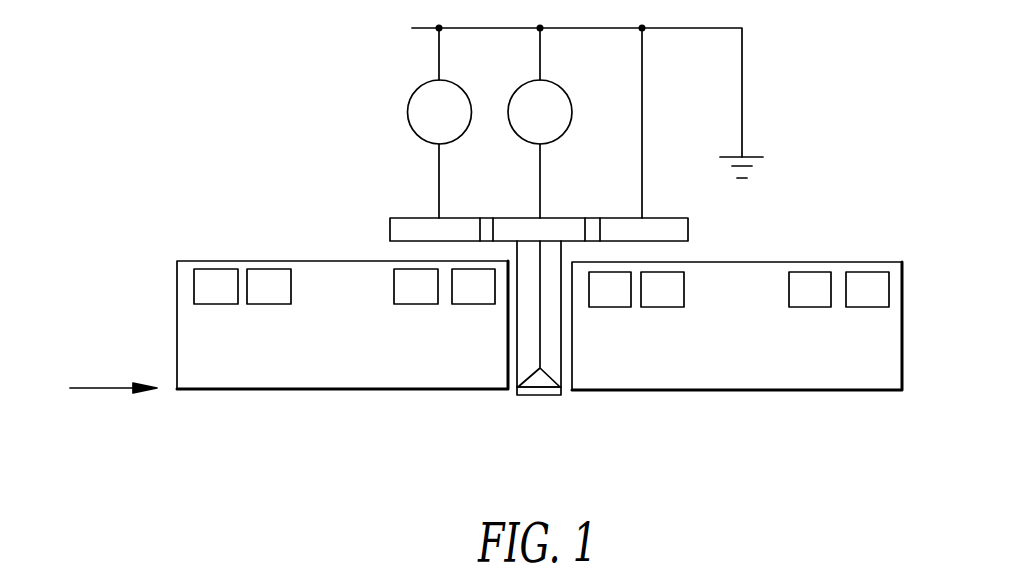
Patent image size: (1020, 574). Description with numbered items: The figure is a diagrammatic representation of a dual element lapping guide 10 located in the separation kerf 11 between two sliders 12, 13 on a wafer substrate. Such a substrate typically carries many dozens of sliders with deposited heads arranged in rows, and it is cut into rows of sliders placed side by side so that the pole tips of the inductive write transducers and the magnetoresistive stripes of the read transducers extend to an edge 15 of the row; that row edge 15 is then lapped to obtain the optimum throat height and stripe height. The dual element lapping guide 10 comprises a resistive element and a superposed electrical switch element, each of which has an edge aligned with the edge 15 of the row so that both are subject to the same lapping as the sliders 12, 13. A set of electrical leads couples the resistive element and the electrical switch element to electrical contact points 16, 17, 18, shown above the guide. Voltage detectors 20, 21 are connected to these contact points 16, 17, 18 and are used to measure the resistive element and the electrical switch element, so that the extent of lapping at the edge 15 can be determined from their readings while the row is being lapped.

The dual element lapping guide 10 is at (552, 398).
The separation kerf 11 is at (510, 402).
The slider 12 is at (220, 261).
The slider 13 is at (772, 263).
The edge of the substrate row 15 is at (102, 387).
The electrical contact point 16 is at (402, 218).
The electrical contact point 17 is at (507, 218).
The electrical contact point 18 is at (613, 218).
The voltage detector 20 is at (413, 90).
The voltage detector 21 is at (515, 90).